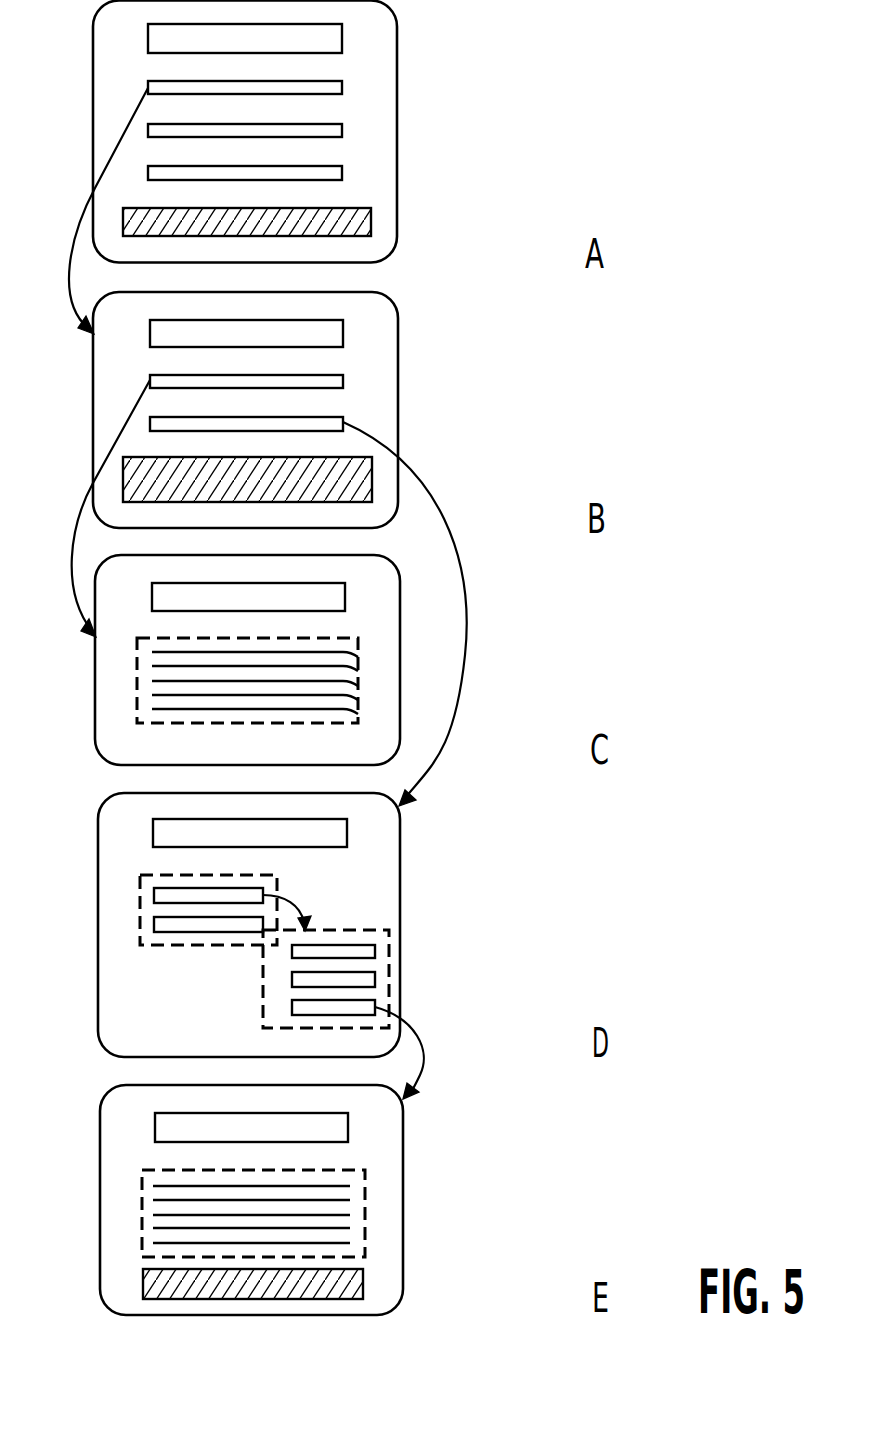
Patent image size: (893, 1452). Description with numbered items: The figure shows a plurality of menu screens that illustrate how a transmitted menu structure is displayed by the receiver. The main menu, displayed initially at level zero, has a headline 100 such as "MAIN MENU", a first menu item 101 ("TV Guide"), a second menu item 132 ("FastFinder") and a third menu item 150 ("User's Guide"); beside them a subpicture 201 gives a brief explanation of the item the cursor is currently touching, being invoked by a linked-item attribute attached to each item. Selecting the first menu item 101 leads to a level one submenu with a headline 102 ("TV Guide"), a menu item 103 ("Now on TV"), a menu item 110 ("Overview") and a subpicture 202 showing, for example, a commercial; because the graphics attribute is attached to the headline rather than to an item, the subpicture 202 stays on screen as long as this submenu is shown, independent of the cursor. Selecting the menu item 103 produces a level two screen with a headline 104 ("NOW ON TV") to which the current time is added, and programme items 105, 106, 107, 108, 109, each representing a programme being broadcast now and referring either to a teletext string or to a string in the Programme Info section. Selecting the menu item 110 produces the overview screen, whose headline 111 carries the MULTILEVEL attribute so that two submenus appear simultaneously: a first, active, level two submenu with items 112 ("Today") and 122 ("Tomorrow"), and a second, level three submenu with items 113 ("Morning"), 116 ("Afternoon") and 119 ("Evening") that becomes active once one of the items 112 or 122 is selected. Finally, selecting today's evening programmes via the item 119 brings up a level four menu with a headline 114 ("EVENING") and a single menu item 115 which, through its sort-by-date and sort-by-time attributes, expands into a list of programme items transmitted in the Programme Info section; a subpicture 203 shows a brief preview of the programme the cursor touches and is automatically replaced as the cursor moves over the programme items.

The headline 100 is at (342, 37).
The first menu item 101 is at (342, 87).
The second menu item 132 is at (342, 131).
The third menu item 150 is at (342, 173).
The subpicture 201 is at (371, 221).
The headline 102 is at (343, 331).
The menu item 103 is at (343, 381).
The menu item 110 is at (343, 424).
The subpicture 202 is at (372, 475).
The headline 104 is at (345, 595).
The programme item 105 is at (358, 657).
The programme item 106 is at (358, 671).
The programme item 107 is at (358, 686).
The programme item 108 is at (358, 700).
The programme item 109 is at (358, 714).
The headline 111 is at (347, 833).
The item 112 is at (154, 896).
The item 122 is at (154, 924).
The item 113 is at (375, 952).
The item 116 is at (375, 980).
The item 119 is at (375, 1005).
The headline 114 is at (348, 1128).
The menu item 115 is at (365, 1200).
The subpicture 203 is at (143, 1288).